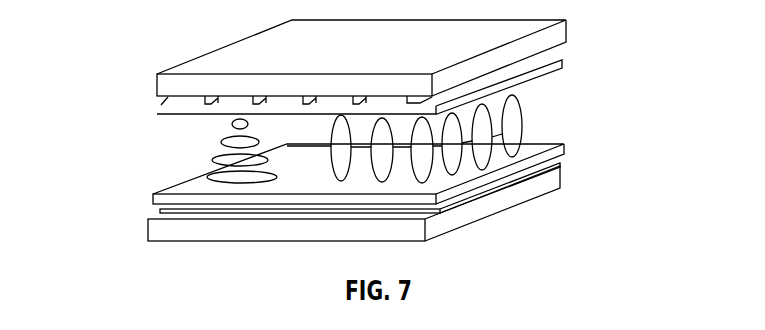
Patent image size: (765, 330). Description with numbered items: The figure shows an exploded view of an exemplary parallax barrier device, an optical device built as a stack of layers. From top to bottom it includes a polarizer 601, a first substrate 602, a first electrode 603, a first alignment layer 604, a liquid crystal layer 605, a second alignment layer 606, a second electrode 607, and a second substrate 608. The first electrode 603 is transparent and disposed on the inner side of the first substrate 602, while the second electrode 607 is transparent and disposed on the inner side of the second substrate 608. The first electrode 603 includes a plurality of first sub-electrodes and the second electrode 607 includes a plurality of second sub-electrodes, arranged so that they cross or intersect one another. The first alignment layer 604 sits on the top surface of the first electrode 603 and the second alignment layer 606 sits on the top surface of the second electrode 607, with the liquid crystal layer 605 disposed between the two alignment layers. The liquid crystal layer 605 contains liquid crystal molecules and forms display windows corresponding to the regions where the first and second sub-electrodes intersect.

The polarizer 601 is at (566, 20).
The first substrate 602 is at (233, 88).
The first electrode 603 is at (236, 106).
The first alignment layer 604 is at (562, 66).
The liquid crystal layer 605 is at (520, 108).
The second alignment layer 606 is at (564, 152).
The second electrode 607 is at (160, 207).
The second substrate 608 is at (562, 182).